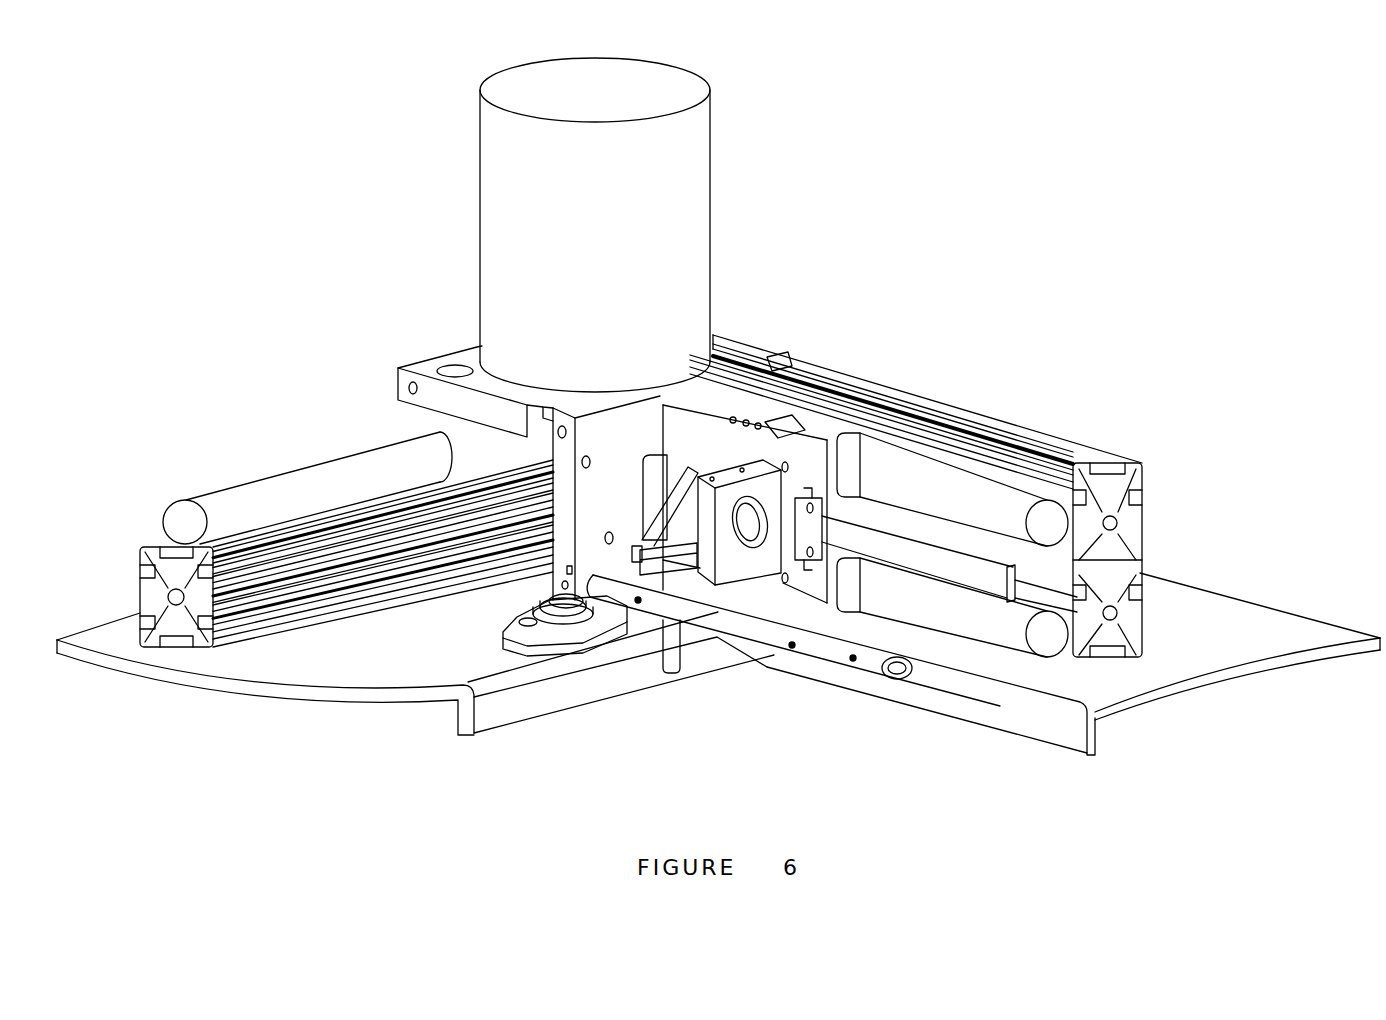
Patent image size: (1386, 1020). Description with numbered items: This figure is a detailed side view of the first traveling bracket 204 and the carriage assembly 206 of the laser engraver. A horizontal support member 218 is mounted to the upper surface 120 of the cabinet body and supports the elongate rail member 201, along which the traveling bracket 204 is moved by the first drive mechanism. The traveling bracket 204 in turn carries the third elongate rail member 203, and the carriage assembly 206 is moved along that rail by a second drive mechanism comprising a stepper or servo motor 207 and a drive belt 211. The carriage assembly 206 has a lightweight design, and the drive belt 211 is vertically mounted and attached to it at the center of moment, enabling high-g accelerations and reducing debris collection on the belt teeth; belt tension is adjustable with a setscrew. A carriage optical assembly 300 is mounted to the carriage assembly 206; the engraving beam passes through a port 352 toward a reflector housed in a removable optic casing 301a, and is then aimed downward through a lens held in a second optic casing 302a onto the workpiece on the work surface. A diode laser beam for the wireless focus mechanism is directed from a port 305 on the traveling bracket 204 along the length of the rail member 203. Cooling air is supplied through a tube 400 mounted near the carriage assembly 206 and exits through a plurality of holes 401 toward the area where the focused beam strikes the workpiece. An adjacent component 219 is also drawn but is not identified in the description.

The upper surface 120 is at (267, 663).
The first elongate rail member 201 is at (237, 510).
The third elongate rail member 203 is at (960, 490).
The first traveling bracket 204 is at (432, 365).
The carriage assembly 206 is at (797, 463).
The stepper or servo motor 207 is at (680, 316).
The drive belt 211 is at (980, 580).
The horizontal support member 218 is at (150, 560).
The extrusion rail 219 is at (1140, 478).
The carriage optical assembly 300 is at (740, 563).
The optic casing 301a is at (672, 515).
The optic casing 302a is at (685, 575).
The port 305 is at (640, 553).
The port 352 is at (767, 505).
The tube 400 is at (873, 672).
The holes 401 is at (638, 600).